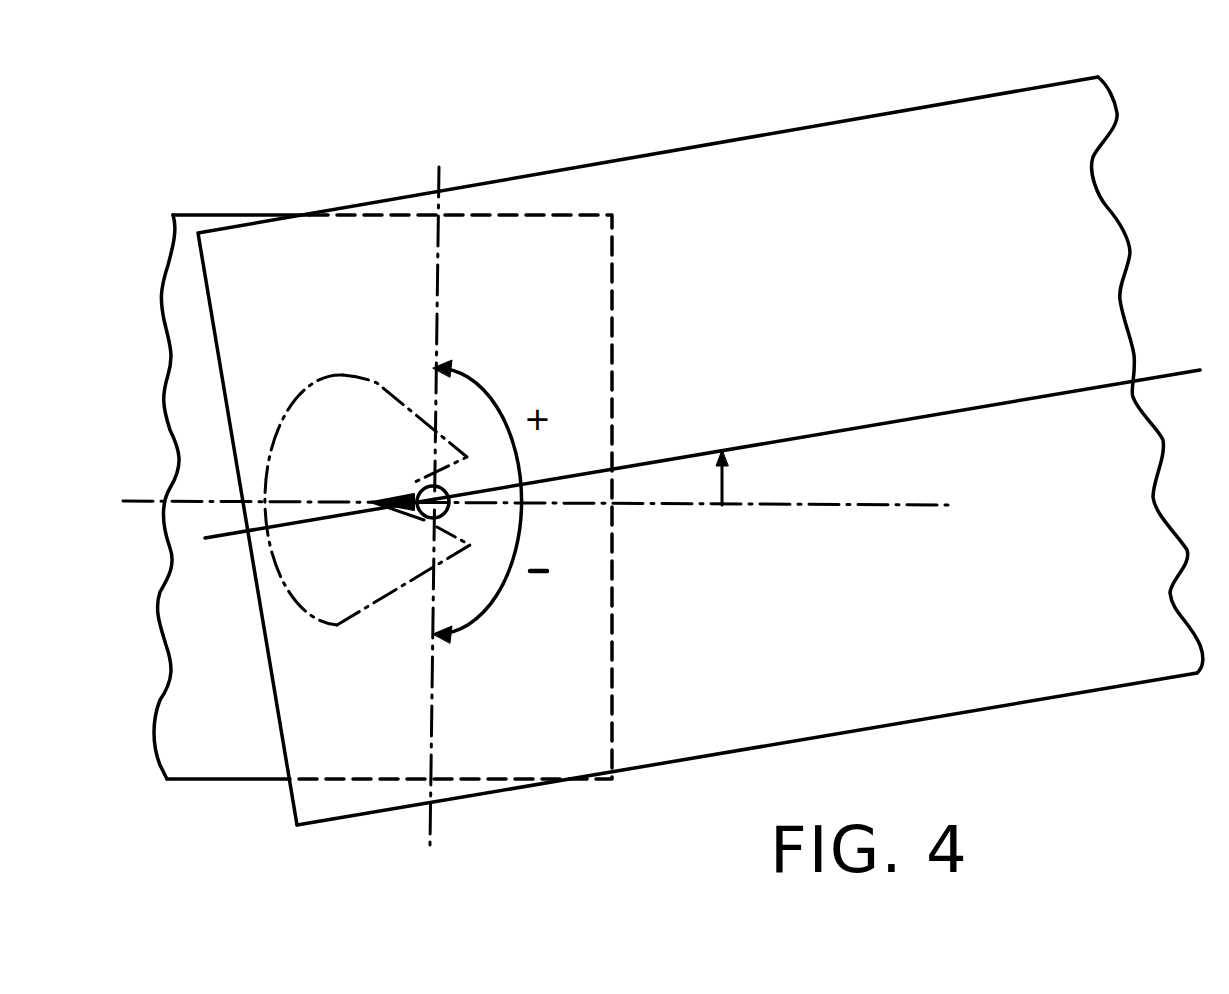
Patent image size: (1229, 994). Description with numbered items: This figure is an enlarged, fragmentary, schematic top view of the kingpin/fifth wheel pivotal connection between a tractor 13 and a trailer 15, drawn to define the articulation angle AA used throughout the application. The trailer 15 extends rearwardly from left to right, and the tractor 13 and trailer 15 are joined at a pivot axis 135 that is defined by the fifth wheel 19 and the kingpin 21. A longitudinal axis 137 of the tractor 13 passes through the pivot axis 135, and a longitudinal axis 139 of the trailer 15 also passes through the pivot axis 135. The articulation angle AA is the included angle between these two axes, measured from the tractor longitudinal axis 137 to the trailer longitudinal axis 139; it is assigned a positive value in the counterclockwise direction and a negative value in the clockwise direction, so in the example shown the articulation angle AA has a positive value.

The tractor 13 is at (180, 282).
The trailer 15 is at (872, 137).
The fifth wheel 19 is at (343, 375).
The kingpin 21 is at (415, 489).
The pivot axis 135 is at (420, 518).
The longitudinal axis of the tractor 137 is at (876, 507).
The longitudinal axis of the trailer 139 is at (900, 415).
The articulation angle AA is at (720, 486).